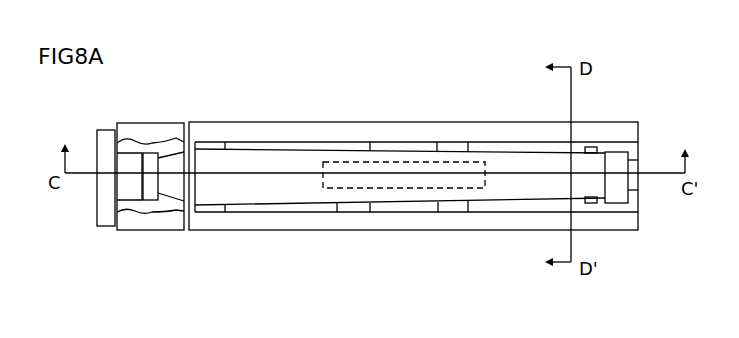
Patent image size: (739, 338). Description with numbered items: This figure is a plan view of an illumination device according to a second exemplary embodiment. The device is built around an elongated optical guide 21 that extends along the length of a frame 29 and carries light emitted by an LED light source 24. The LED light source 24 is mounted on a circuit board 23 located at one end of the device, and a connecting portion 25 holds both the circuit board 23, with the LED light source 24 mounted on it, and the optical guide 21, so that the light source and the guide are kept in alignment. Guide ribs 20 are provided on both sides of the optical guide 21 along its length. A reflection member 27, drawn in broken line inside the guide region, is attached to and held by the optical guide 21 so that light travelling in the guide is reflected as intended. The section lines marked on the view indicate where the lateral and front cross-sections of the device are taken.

The guide ribs 20 is at (215, 140).
The optical guide 21 is at (287, 197).
The circuit board 23 is at (105, 193).
The LED light source 24 is at (133, 158).
The connecting portion 25 is at (137, 228).
The reflection member 27 is at (400, 158).
The frame 29 is at (535, 128).